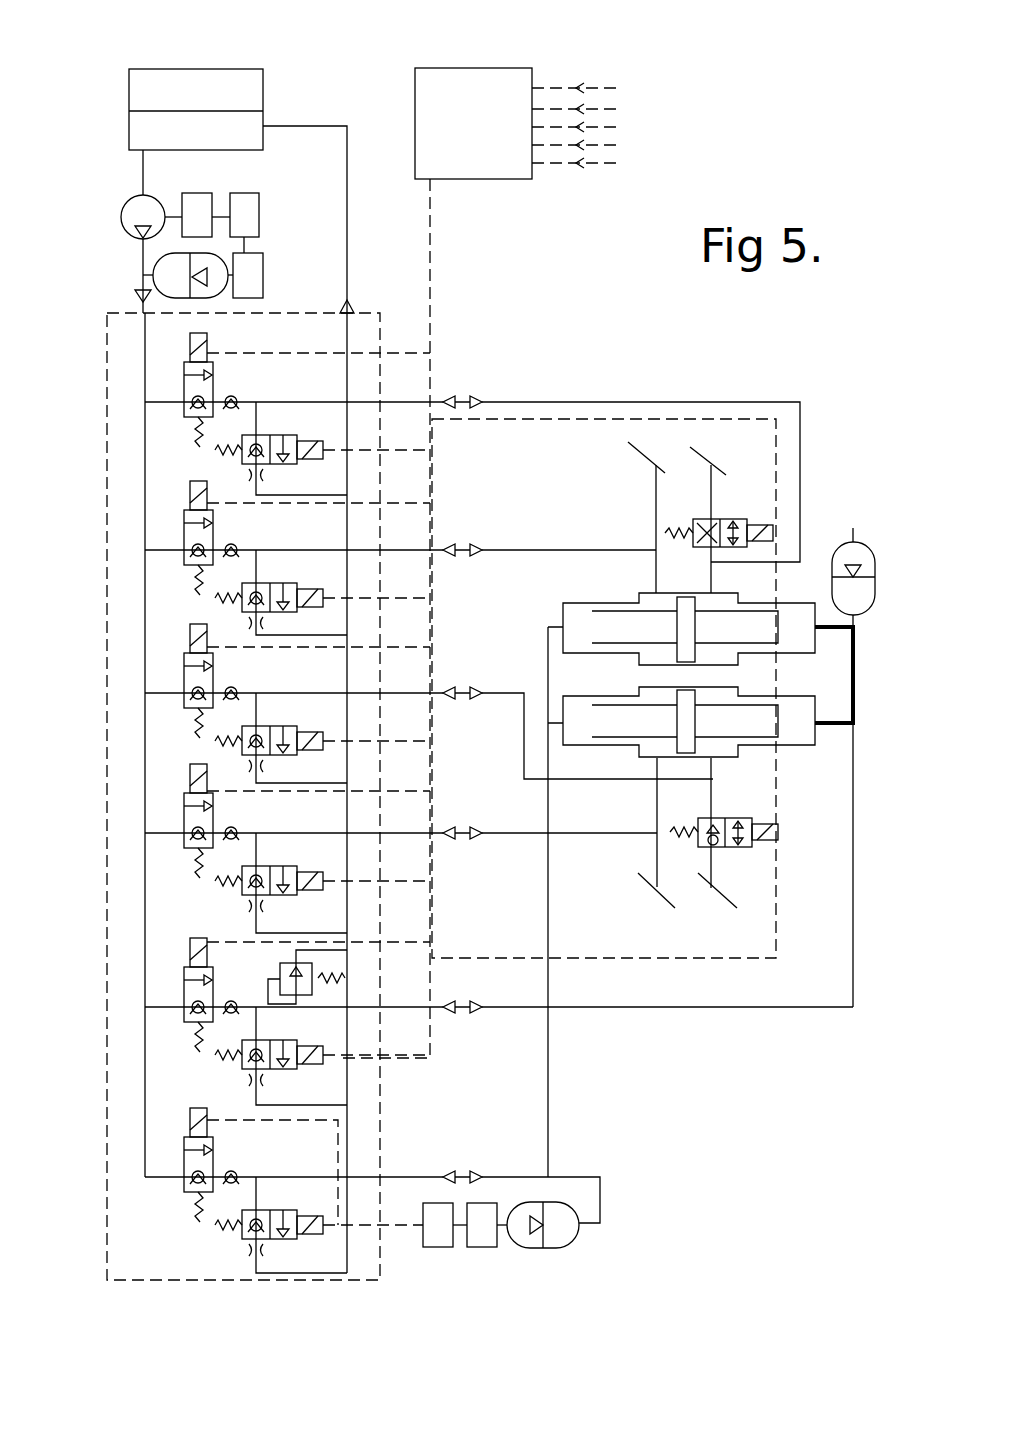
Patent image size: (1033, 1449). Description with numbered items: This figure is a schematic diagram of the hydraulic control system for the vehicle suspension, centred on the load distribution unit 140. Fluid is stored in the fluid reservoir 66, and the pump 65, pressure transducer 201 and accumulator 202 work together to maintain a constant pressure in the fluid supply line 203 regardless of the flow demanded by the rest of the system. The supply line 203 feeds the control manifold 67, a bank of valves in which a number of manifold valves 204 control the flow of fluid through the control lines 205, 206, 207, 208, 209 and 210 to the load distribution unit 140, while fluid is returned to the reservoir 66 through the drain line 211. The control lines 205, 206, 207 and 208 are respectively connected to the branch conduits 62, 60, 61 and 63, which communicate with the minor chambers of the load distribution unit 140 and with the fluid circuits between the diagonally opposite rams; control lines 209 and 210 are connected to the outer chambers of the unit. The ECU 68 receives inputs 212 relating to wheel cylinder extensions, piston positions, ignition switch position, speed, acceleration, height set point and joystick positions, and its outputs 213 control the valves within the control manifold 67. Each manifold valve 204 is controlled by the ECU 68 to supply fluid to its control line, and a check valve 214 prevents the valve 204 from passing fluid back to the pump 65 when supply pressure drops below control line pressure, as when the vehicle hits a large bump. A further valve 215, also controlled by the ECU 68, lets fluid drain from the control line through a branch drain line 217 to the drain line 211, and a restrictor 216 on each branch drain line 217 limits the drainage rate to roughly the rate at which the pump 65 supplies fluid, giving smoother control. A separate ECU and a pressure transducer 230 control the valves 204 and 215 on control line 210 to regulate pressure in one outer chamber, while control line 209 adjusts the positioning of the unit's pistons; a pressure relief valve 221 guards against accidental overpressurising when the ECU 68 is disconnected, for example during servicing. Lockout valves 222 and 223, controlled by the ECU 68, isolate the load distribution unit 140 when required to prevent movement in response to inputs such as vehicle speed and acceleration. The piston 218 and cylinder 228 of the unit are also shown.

The branch conduit 60 is at (650, 466).
The branch conduit 61 is at (715, 874).
The branch conduit 62 is at (712, 488).
The branch conduit 63 is at (655, 866).
The pump 65 is at (126, 198).
The fluid reservoir 66 is at (262, 70).
The control manifold 67 is at (105, 585).
The ECU 68 is at (415, 76).
The load distribution unit 140 is at (556, 618).
The pressure transducer 201 is at (258, 287).
The accumulator 202 is at (160, 268).
The fluid supply line 203 is at (132, 288).
The manifold valve 204 is at (183, 386).
The control line 205 is at (565, 400).
The control line 206 is at (505, 548).
The control line 207 is at (496, 690).
The control line 208 is at (484, 830).
The control line 209 is at (497, 1010).
The control line 210 is at (507, 1174).
The drain line 211 is at (348, 258).
The inputs 212 is at (600, 82).
The outputs 213 is at (430, 268).
The check valve 214 is at (240, 394).
The further valve 215 is at (267, 435).
The restrictor 216 is at (265, 482).
The branch drain line 217 is at (248, 490).
The piston 218 is at (688, 630).
The pressure relief valve 221 is at (280, 967).
The lockout valve 222 is at (722, 552).
The lockout valve 223 is at (755, 852).
The cylinder 228 is at (743, 733).
The pressure transducer 230 is at (487, 1247).